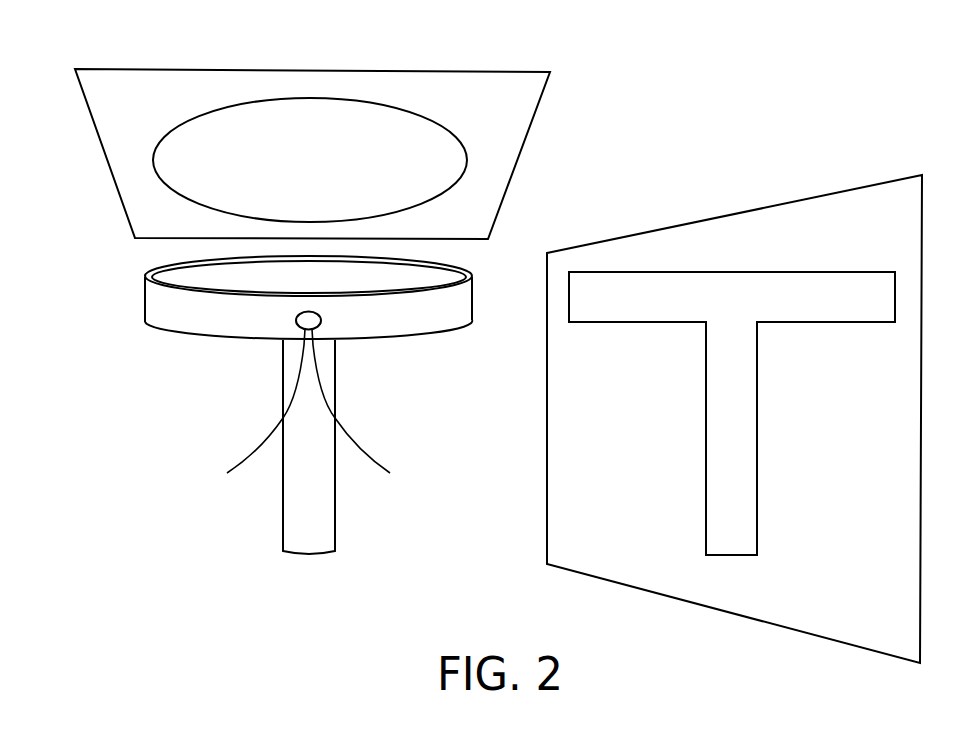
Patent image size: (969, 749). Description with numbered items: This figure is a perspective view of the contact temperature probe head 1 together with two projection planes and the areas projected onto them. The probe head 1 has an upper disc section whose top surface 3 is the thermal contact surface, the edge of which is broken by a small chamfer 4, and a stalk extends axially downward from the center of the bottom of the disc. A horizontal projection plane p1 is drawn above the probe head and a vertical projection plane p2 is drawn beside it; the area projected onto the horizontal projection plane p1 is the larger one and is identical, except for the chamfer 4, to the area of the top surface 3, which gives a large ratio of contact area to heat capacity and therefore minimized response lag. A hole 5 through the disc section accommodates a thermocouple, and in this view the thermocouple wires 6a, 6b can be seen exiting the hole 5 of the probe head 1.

The horizontal projection plane p1 is at (213, 86).
The vertical projection plane p2 is at (743, 238).
The contact temperature probe head 1 is at (102, 290).
The top surface 3 is at (237, 289).
The chamfer 4 is at (467, 280).
The diametral hole 5 is at (313, 320).
The thermocouple wire 6a is at (268, 445).
The thermocouple wire 6b is at (345, 445).